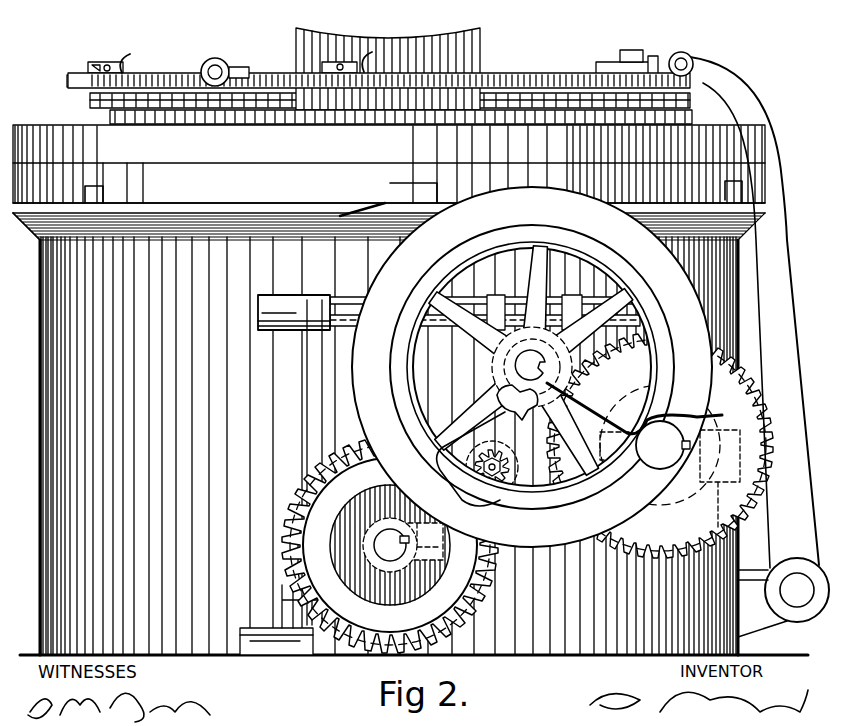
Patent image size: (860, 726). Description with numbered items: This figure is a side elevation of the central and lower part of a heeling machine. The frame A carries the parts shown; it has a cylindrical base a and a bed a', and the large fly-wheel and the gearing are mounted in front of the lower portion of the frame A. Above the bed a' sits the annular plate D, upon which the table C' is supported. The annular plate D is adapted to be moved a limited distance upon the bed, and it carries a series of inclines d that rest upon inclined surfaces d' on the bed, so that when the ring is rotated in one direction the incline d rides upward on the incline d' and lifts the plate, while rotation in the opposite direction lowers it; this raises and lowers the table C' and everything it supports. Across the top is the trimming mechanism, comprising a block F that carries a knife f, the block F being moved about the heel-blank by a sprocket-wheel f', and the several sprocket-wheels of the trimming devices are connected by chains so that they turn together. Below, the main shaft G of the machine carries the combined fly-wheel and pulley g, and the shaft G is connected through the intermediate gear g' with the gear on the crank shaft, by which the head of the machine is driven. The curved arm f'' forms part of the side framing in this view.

The frame A is at (490, 606).
The table C' is at (389, 164).
The annular plate D is at (389, 193).
The incline d is at (249, 189).
The inclined surface d' is at (376, 204).
The cylindrical base a is at (56, 232).
The bed a' is at (698, 188).
The main shaft G is at (449, 312).
The combined fly-wheel and pulley g is at (532, 367).
The intermediate gear g' is at (579, 444).
The block F is at (362, 69).
The knife f is at (380, 66).
The sprocket-wheel f' is at (390, 341).
The side frame arm f'' is at (759, 347).